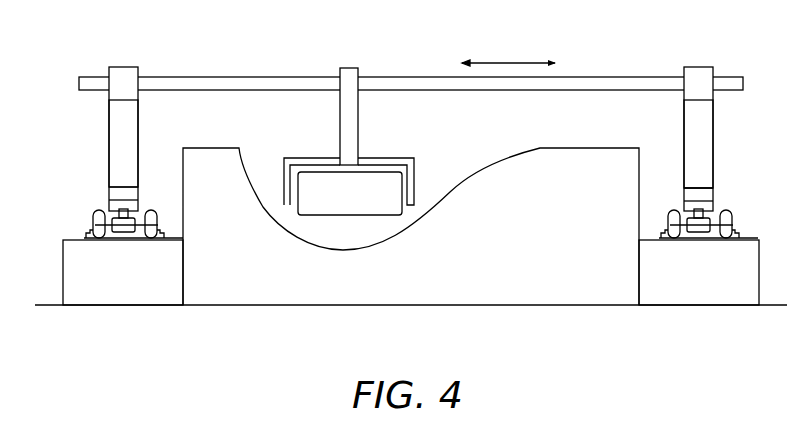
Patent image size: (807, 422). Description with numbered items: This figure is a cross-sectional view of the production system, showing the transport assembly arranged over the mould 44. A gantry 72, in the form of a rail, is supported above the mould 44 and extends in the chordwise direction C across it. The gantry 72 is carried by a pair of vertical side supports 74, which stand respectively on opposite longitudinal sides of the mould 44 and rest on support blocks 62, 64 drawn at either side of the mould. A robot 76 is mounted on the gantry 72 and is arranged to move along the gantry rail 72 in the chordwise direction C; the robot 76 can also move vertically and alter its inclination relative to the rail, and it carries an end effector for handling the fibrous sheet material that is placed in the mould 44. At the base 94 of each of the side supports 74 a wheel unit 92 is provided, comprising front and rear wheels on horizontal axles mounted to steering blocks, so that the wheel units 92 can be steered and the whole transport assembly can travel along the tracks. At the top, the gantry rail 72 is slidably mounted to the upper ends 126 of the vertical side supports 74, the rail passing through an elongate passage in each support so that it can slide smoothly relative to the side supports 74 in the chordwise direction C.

The mould 44 is at (410, 298).
The left support block 62 is at (124, 298).
The right support block 64 is at (699, 298).
The gantry 72 is at (190, 77).
The vertical side supports 74 is at (116, 117).
The robot 76 is at (366, 118).
The wheel unit 92 is at (80, 216).
The base 94 is at (703, 185).
The upper ends 126 is at (125, 67).
The chordwise direction C is at (507, 63).